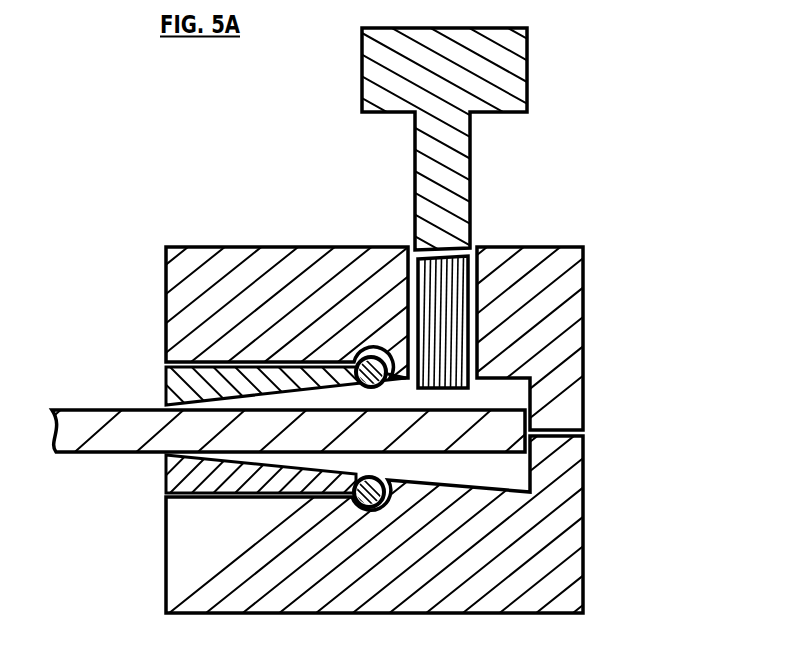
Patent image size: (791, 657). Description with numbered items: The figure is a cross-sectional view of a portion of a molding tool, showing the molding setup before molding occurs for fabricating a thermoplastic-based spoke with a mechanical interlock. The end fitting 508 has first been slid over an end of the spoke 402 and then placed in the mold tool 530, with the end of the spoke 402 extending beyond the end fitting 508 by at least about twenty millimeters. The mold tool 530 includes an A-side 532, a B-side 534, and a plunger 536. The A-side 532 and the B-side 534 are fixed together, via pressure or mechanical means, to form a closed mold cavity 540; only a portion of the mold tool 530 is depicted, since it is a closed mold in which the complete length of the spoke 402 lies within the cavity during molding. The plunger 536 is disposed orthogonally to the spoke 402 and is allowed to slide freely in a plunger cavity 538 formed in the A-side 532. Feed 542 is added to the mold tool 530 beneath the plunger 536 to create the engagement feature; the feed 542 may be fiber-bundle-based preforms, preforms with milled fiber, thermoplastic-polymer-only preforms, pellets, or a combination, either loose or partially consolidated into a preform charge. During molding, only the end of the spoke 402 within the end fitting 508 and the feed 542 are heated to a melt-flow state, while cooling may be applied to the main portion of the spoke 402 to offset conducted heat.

The spoke 402 is at (110, 453).
The end fitting 508 is at (165, 373).
The mold tool 530 is at (633, 231).
The A-side 532 is at (257, 264).
The B-side 534 is at (565, 542).
The plunger 536 is at (528, 78).
The plunger cavity 538 is at (398, 228).
The closed mold cavity 540 is at (503, 395).
The feed 542 is at (450, 302).